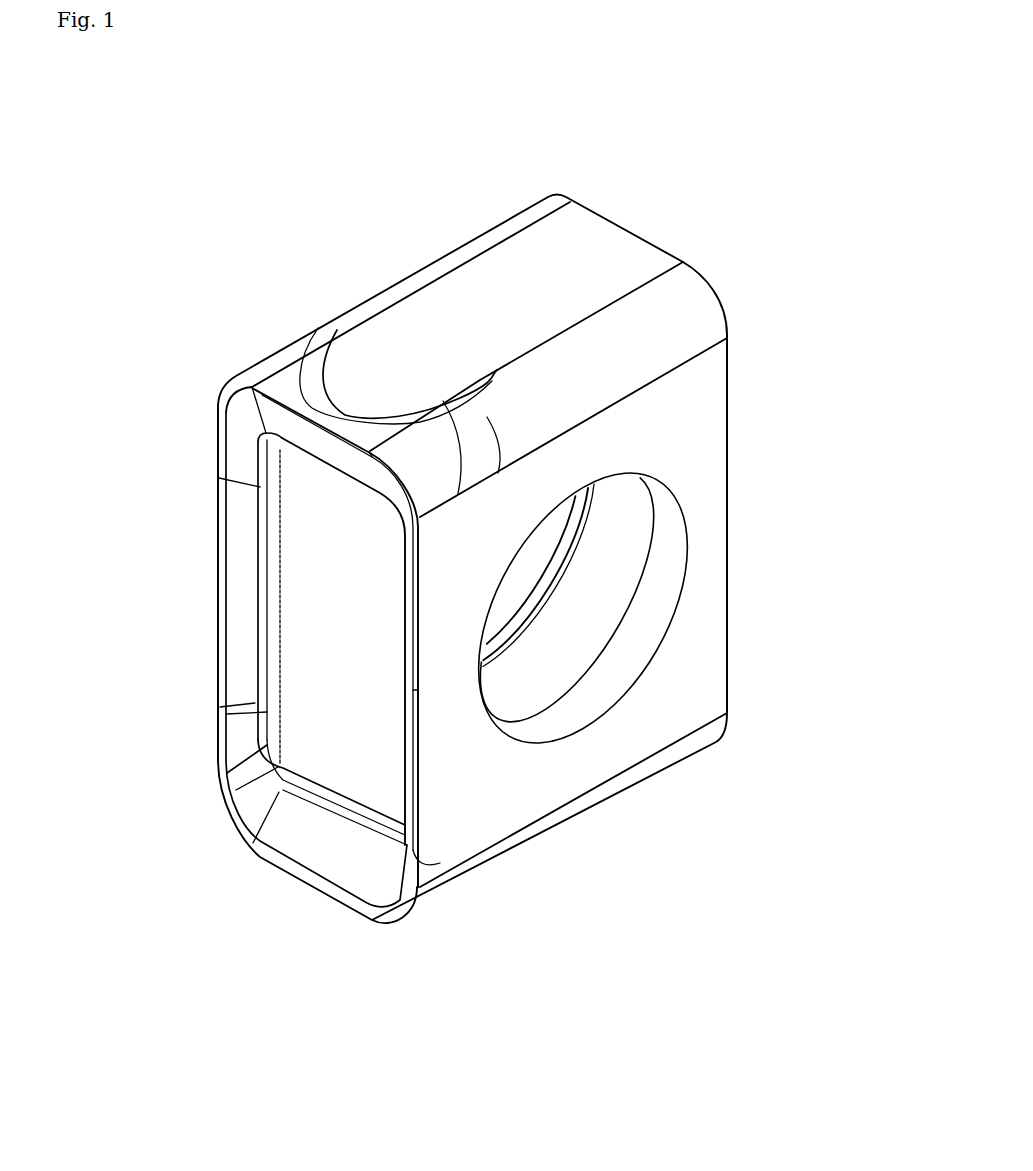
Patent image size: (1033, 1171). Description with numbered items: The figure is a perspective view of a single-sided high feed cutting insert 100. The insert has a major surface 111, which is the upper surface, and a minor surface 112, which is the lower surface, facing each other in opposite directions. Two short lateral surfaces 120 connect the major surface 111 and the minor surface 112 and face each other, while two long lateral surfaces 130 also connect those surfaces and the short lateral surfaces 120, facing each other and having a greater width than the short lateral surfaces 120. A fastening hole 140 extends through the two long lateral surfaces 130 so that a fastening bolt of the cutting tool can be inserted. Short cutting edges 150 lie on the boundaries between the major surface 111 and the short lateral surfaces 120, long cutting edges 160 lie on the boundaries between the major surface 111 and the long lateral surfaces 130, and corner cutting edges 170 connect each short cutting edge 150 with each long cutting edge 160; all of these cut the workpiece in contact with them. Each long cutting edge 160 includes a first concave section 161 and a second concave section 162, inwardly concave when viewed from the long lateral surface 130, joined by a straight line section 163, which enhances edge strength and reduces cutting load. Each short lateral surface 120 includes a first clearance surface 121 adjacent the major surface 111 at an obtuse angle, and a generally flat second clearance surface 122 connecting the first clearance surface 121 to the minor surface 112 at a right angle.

The single-sided high feed cutting insert 100 is at (643, 205).
The major surface 111 is at (311, 653).
The minor surface 112 is at (729, 437).
The short lateral surface 120 is at (510, 271).
The first clearance surface 121 is at (282, 375).
The second clearance surface 122 is at (425, 350).
The long lateral surface 130 is at (682, 686).
The fastening hole 140 is at (606, 592).
The short cutting edge 150 is at (272, 425).
The long cutting edge 160 is at (218, 577).
The first concave section 161 is at (418, 860).
The second concave section 162 is at (420, 528).
The straight line section 163 is at (423, 693).
The corner cutting edge 170 is at (238, 375).